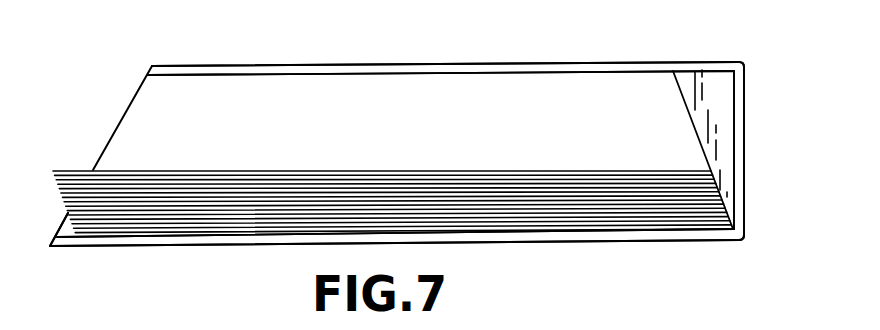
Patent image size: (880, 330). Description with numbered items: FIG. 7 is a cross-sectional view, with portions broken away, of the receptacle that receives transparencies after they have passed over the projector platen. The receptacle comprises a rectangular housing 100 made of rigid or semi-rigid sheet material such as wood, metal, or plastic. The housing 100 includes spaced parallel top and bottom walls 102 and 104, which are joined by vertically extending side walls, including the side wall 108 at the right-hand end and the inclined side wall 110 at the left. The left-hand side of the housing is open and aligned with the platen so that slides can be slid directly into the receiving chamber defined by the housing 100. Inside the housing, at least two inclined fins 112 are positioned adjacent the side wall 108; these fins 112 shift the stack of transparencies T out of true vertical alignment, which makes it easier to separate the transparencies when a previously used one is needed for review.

The rectangular housing 100 is at (722, 50).
The top wall 102 is at (377, 64).
The bottom wall 104 is at (258, 238).
The side wall 108 is at (747, 208).
The side wall 110 is at (137, 125).
The inclined fins 112 is at (678, 97).
The stack of transparencies T is at (82, 168).